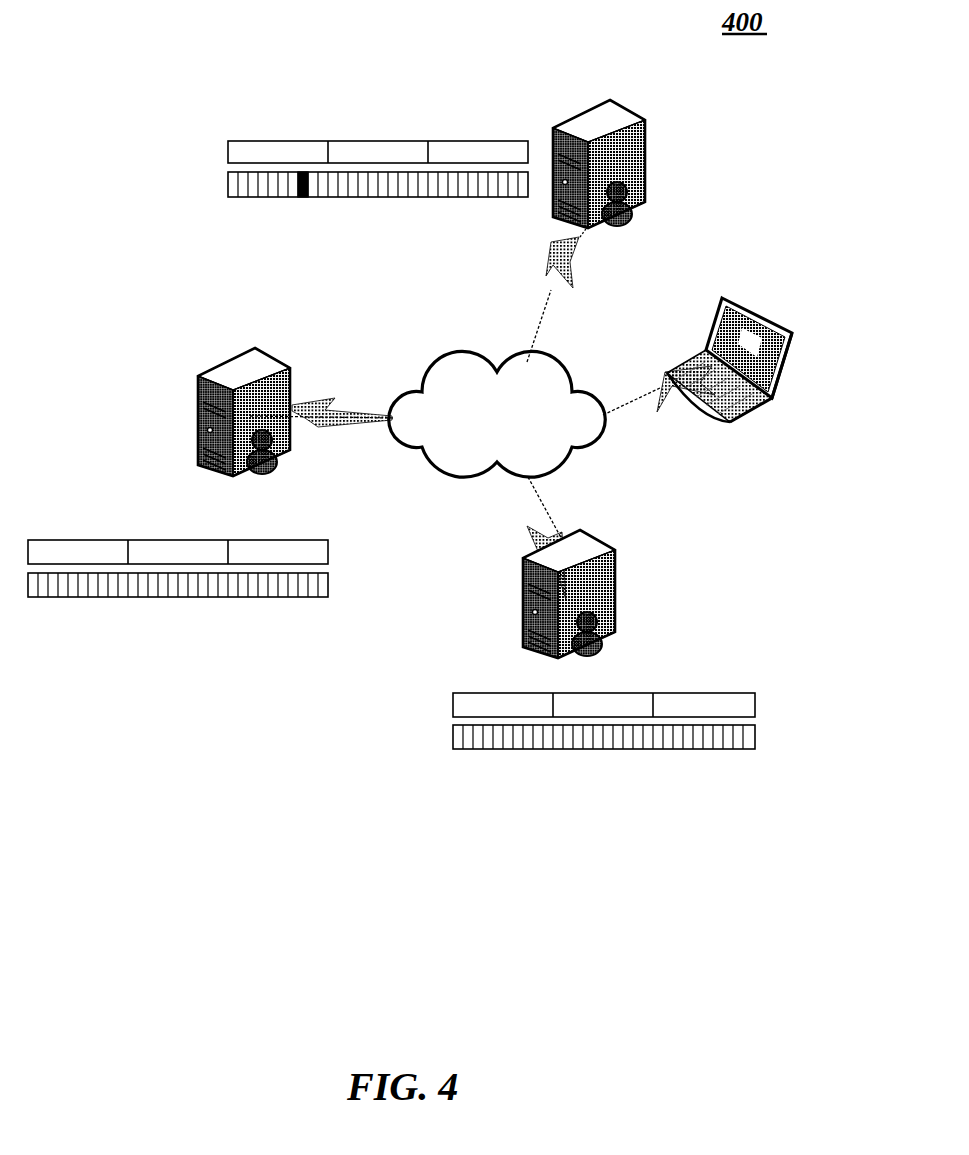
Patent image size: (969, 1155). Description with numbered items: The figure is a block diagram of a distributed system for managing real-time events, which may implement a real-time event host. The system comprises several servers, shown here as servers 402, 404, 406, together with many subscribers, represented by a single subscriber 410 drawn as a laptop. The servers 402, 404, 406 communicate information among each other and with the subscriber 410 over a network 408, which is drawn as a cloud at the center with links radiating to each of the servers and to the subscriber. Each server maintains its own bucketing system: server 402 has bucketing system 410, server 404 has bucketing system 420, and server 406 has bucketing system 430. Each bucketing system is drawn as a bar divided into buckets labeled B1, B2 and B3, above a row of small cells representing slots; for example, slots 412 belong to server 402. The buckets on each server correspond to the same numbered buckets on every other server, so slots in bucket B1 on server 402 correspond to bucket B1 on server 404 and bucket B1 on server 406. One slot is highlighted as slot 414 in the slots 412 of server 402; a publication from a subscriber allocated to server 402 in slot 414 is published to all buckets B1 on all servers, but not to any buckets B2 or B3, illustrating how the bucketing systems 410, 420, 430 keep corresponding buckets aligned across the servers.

The server 402 is at (645, 140).
The server 404 is at (250, 352).
The server 406 is at (615, 566).
The network 408 is at (497, 414).
The subscriber / bucketing system 410 is at (748, 310).
The slots 412 is at (209, 173).
The slot 414 is at (303, 198).
The bucketing system 420 is at (298, 521).
The bucketing system 430 is at (707, 673).